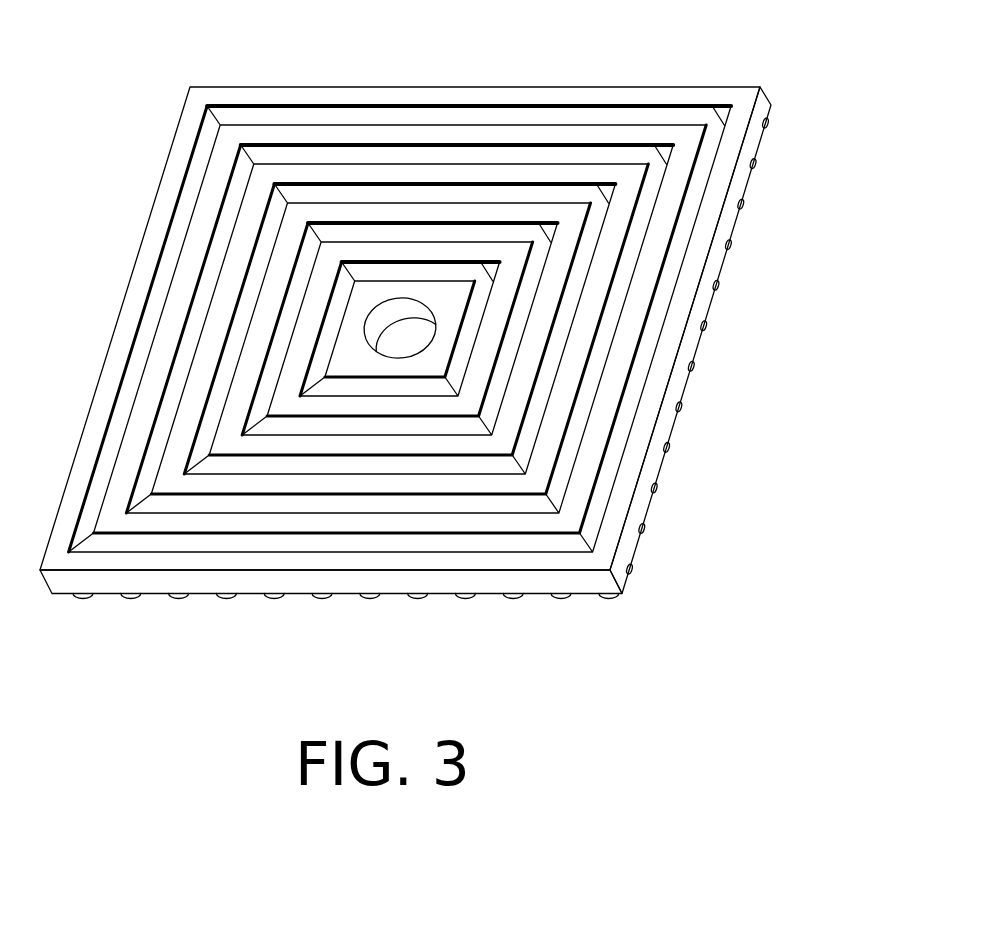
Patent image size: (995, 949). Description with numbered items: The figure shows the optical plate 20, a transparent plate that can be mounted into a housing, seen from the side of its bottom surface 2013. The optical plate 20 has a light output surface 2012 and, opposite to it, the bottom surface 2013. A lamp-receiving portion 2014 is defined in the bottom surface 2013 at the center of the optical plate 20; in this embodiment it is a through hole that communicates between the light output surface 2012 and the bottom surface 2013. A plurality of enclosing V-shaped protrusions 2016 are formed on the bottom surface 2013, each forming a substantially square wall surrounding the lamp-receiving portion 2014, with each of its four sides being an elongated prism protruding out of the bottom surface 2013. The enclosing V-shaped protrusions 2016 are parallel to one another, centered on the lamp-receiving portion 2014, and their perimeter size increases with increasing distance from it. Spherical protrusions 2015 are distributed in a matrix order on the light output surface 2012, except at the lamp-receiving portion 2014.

The optical plate 20 is at (455, 310).
The light output surface 2012 is at (455, 343).
The bottom surface 2013 is at (745, 118).
The lamp-receiving portion 2014 is at (410, 328).
The spherical protrusions 2015 is at (738, 217).
The enclosing V-shaped protrusions 2016 is at (702, 170).